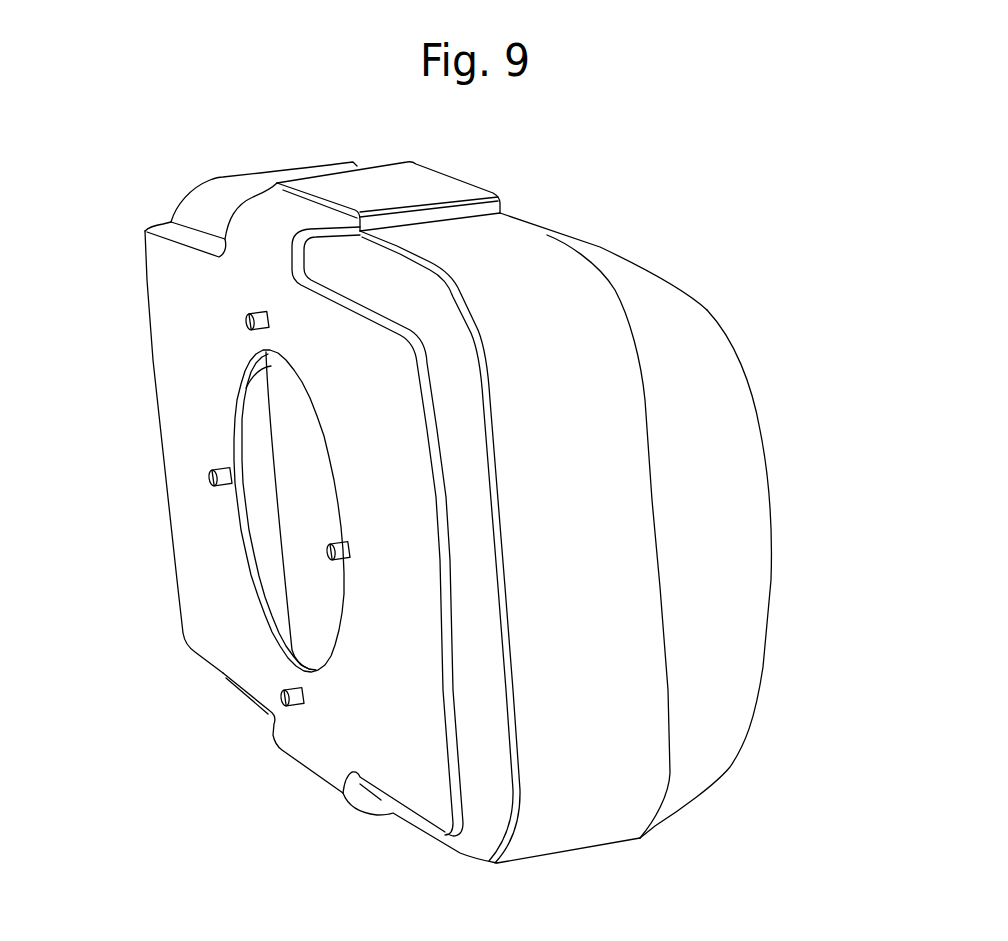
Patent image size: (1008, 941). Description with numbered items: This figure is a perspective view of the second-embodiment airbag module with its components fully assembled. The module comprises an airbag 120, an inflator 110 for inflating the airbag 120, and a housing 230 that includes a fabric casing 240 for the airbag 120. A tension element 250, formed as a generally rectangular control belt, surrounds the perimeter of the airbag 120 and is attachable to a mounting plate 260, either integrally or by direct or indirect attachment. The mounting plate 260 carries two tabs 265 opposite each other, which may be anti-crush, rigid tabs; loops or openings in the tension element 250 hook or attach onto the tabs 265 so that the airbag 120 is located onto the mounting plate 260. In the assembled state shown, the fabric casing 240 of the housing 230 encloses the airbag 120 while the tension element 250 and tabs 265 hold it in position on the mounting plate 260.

The inflator 110 is at (298, 454).
The airbag 120 is at (587, 512).
The housing 230 is at (800, 617).
The fabric casing 240 is at (763, 556).
The tension element 250 is at (543, 247).
The mounting plate 260 is at (122, 404).
The tabs 265 is at (263, 220).